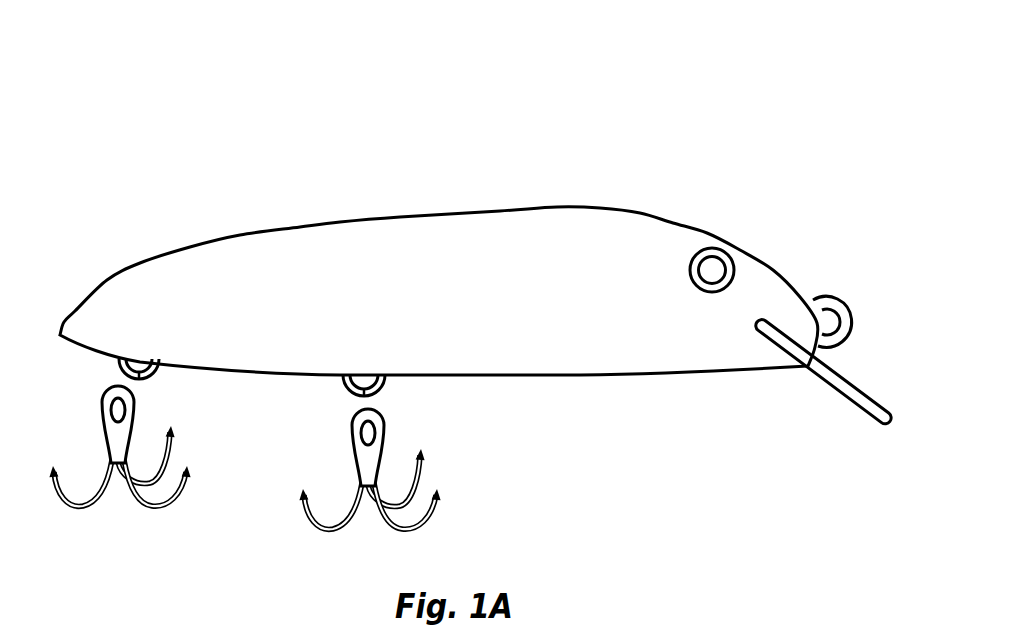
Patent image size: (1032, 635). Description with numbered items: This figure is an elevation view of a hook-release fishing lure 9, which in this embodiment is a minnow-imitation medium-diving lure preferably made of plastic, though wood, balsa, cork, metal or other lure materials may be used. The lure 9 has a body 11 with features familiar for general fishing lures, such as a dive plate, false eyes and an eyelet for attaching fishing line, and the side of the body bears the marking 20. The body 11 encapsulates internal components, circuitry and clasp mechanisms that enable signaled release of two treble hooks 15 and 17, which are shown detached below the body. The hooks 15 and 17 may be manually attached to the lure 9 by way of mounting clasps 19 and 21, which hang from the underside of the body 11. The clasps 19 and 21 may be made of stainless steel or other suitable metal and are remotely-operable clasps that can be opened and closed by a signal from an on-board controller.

The hook-release fishing lure 9 is at (464, 135).
The lure body 11 is at (540, 206).
The treble hook 15 is at (185, 497).
The treble hook 17 is at (437, 515).
The mounting clasp 19 is at (105, 367).
The body side surface 20 is at (508, 318).
The mounting clasp 21 is at (343, 376).